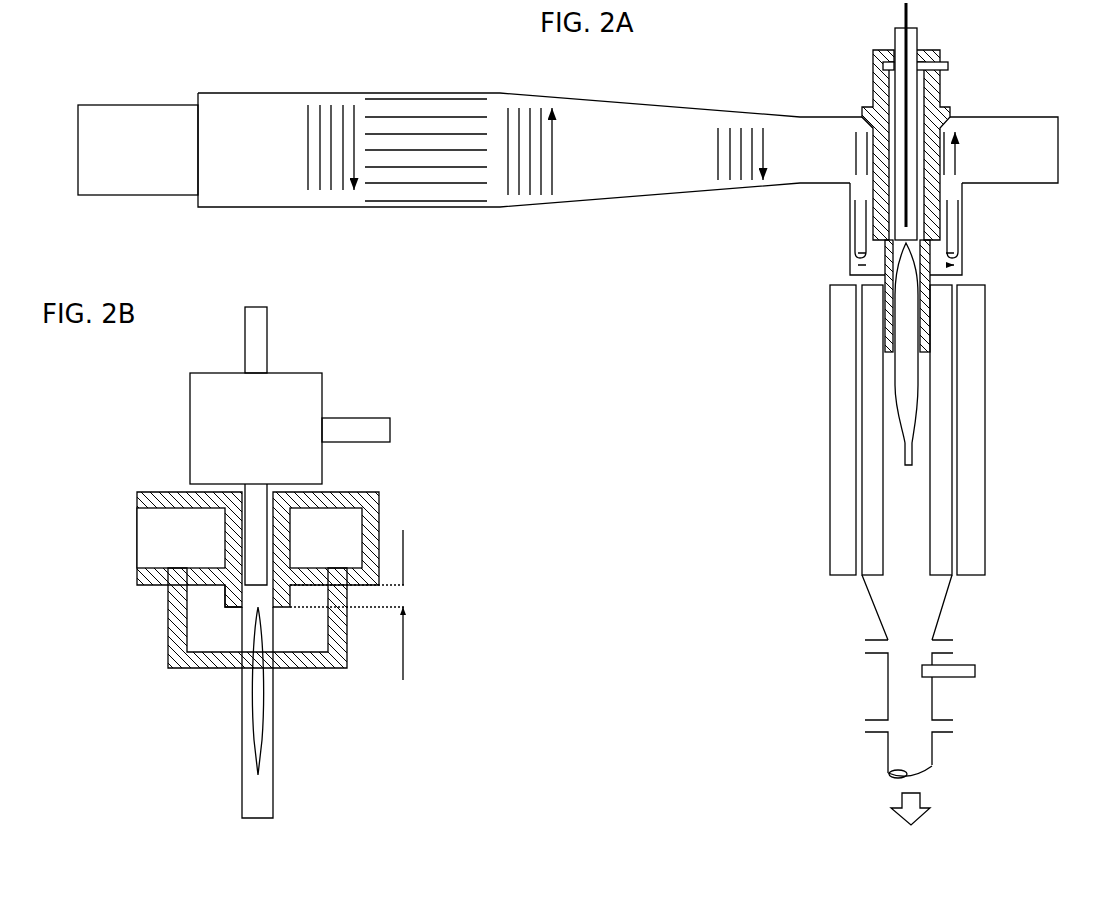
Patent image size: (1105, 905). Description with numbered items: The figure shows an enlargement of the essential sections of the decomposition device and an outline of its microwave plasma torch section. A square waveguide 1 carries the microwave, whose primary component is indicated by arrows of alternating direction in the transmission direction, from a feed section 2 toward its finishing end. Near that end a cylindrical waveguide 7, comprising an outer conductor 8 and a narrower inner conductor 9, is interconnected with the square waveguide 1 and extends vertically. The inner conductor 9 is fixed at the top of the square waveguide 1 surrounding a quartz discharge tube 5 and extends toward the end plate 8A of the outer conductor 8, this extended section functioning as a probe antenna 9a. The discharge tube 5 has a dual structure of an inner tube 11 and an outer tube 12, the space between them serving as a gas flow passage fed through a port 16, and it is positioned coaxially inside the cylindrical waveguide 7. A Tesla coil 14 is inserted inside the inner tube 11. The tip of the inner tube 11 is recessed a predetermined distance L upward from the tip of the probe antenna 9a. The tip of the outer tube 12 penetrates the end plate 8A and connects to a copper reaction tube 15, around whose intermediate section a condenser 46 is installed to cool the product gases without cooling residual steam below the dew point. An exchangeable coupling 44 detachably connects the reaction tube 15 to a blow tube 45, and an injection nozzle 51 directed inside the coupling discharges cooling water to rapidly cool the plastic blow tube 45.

In FIG. 2A, the square waveguide 1 is at (455, 93).
In FIG. 2A, the upstream pipe 2 is at (147, 105).
In FIG. 2A, the quartz discharge tube 5 is at (1018, 203).
In FIG. 2B, the quartz discharge tube 5 is at (283, 700).
In FIG. 2A, the cylindrical waveguide 7 is at (787, 50).
In FIG. 2B, the cylindrical waveguide 7 is at (137, 486).
In FIG. 2A, the outer conductor 8 is at (850, 193).
In FIG. 2B, the outer conductor 8 is at (172, 665).
In FIG. 2A, the end plate 8A is at (862, 277).
In FIG. 2A, the inner conductor 9 is at (873, 83).
In FIG. 2B, the inner conductor 9 is at (258, 549).
In FIG. 2A, the probe antenna 9a is at (873, 195).
In FIG. 2B, the probe antenna 9a is at (227, 598).
In FIG. 2A, the inner tube 11 is at (913, 210).
In FIG. 2B, the inner tube 11 is at (258, 535).
In FIG. 2A, the outer tube 12 is at (927, 302).
In FIG. 2B, the outer tube 12 is at (262, 793).
In FIG. 2A, the Tesla coil 14 is at (904, 12).
In FIG. 2A, the copper reaction tube 15 is at (957, 400).
In FIG. 2A, the gas supply port 16 is at (946, 65).
In FIG. 2B, the gas supply port 16 is at (360, 418).
In FIG. 2A, the exchangeable coupling 44 is at (932, 703).
In FIG. 2A, the blow tube 45 is at (930, 760).
In FIG. 2A, the condenser 46 is at (983, 505).
In FIG. 2A, the injection nozzle 51 is at (967, 665).
In FIG. 2B, the predetermined distance L is at (364, 605).